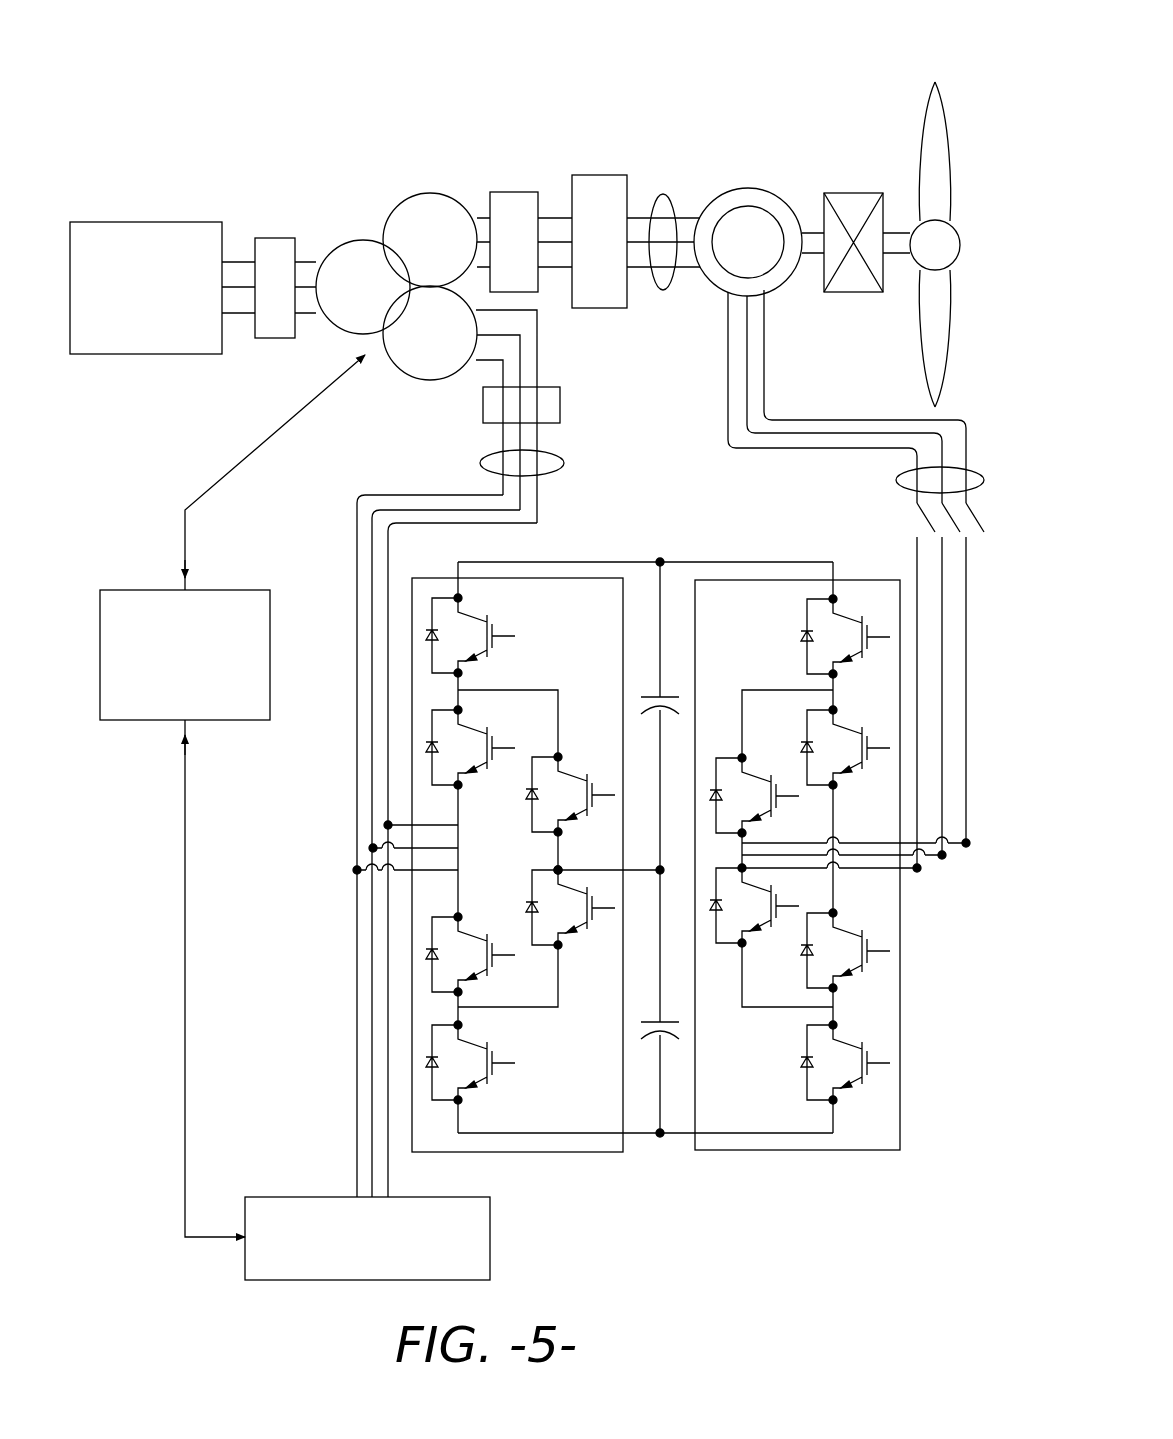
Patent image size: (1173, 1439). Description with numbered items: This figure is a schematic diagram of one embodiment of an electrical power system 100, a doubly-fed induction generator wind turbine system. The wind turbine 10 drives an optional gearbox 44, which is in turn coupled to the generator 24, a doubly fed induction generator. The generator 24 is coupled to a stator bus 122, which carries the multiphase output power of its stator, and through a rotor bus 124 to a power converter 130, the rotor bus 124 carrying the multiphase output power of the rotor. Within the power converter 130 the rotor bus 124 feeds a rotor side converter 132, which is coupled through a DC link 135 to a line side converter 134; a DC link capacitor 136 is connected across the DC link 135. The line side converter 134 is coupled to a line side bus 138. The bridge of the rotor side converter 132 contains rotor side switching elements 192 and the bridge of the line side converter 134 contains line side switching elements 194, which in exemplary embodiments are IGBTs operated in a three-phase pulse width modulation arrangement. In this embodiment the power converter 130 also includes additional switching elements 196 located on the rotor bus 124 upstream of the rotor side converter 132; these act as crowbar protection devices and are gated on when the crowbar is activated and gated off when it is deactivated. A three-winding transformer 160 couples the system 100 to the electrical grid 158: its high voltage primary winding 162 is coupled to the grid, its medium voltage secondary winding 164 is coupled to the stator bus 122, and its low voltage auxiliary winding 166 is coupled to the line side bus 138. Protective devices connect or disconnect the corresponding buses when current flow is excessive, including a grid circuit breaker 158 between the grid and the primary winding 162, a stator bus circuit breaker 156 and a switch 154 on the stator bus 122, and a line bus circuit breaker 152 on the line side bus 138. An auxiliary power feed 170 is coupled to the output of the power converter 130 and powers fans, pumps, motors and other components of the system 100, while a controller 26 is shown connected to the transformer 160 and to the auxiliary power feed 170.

The wind turbine 10 is at (957, 93).
The generator 24 is at (750, 188).
The controller 26 is at (218, 590).
The gearbox 44 is at (858, 193).
The electrical power system 100 is at (690, 92).
The stator bus 122 is at (664, 194).
The rotor bus 124 is at (897, 482).
The power converter 130 is at (667, 857).
The rotor side converter 132 is at (832, 884).
The line side converter 134 is at (536, 884).
The DC link 135 is at (655, 597).
The DC link capacitor 136 is at (668, 685).
The line side bus 138 is at (562, 462).
The line bus circuit breaker 152 is at (560, 404).
The switch 154 is at (605, 175).
The stator bus circuit breaker 156 is at (514, 192).
The grid circuit breaker 158 is at (275, 238).
The transformer 160 is at (396, 248).
The primary winding 162 is at (330, 250).
The secondary winding 164 is at (430, 192).
The auxiliary winding 166 is at (437, 385).
The auxiliary power feed 170 is at (300, 1197).
The rotor side switching elements 192 is at (722, 960).
The line side switching elements 194 is at (576, 955).
The additional switching elements 196 is at (905, 520).